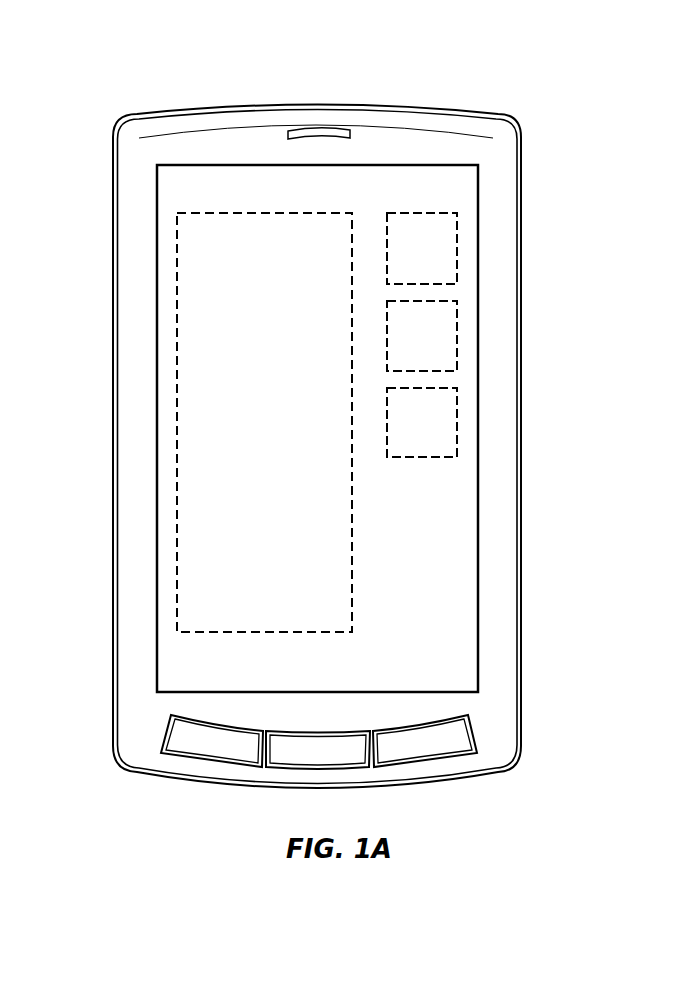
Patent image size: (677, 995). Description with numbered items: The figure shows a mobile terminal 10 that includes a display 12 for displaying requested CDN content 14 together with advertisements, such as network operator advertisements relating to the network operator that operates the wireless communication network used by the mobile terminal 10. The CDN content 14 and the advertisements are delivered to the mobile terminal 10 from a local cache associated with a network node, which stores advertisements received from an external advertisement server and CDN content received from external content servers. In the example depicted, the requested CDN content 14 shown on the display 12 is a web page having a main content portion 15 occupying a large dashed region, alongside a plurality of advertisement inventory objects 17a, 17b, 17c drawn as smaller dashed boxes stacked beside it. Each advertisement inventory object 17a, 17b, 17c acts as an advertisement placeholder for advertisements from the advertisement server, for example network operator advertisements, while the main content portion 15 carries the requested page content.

The mobile terminal 10 is at (158, 89).
The display 12 is at (157, 332).
The CDN content 14 is at (187, 195).
The main content portion 15 is at (264, 422).
The advertisement inventory object 17a is at (435, 235).
The advertisement inventory object 17b is at (435, 318).
The advertisement inventory object 17c is at (437, 409).